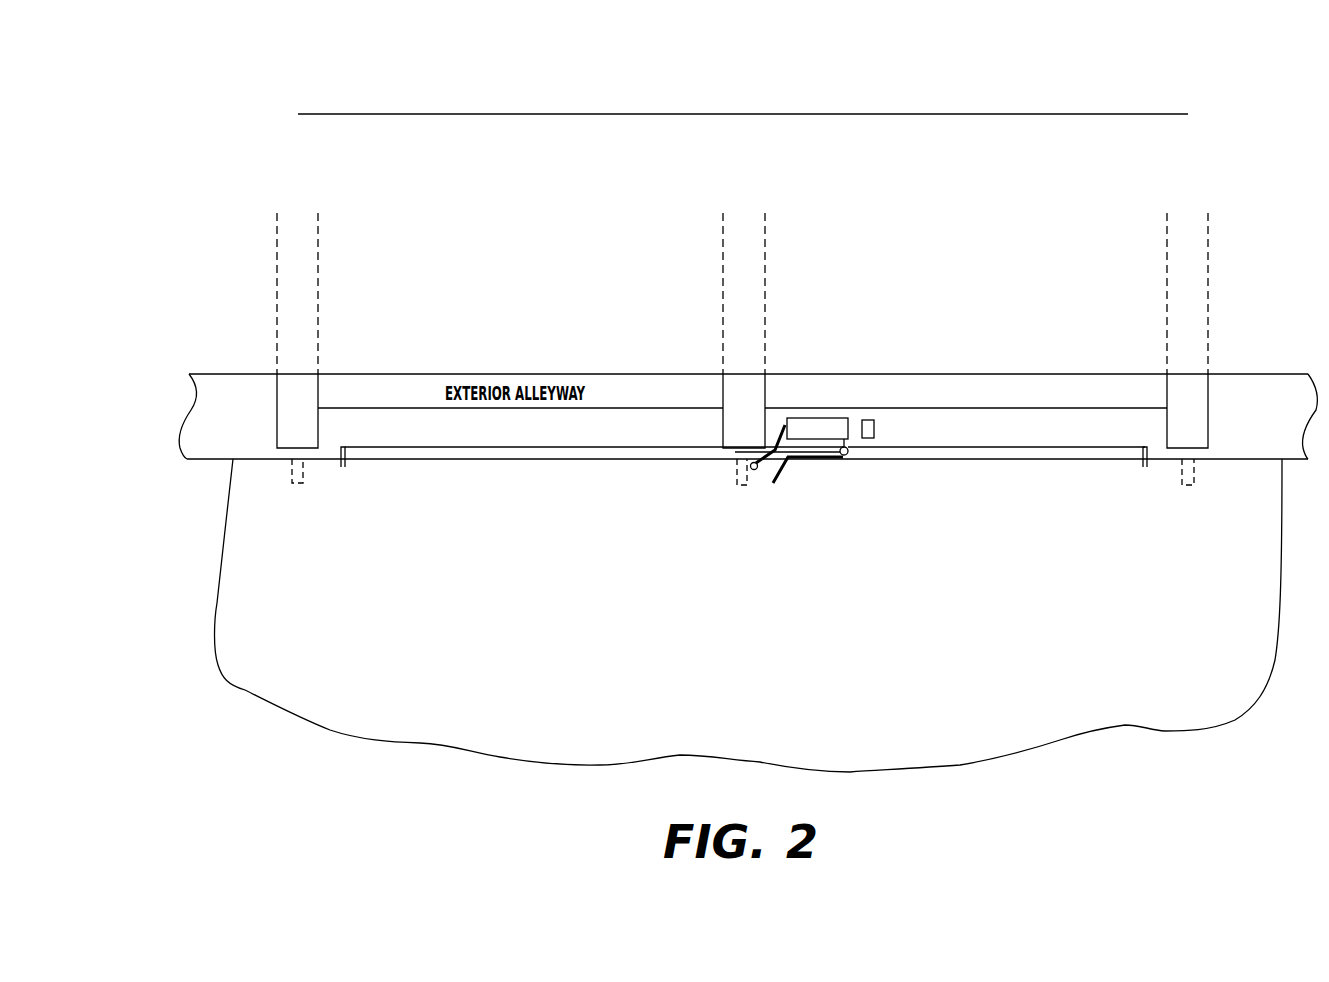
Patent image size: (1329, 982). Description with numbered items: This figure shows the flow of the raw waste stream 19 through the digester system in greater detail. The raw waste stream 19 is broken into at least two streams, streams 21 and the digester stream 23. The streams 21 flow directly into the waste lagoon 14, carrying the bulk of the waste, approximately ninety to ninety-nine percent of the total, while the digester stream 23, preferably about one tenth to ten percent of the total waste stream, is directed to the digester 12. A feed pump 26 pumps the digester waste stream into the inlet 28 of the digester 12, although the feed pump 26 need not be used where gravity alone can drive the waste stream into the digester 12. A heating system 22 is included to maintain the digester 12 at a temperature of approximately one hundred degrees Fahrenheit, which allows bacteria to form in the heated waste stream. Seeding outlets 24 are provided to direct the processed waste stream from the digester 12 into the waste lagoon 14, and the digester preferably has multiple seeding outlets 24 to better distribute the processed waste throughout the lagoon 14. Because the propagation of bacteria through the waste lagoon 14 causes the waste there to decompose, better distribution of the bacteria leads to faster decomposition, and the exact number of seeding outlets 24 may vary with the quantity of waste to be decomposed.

The raw waste stream 19 is at (735, 108).
The stream 21 is at (298, 211).
The digester stream 23 is at (743, 211).
The seeding outlet 24 is at (625, 450).
The digester 12 is at (825, 421).
The heating system 22 is at (871, 419).
The inlet 28 is at (780, 438).
The feed pump 26 is at (754, 470).
The waste lagoon 14 is at (790, 627).